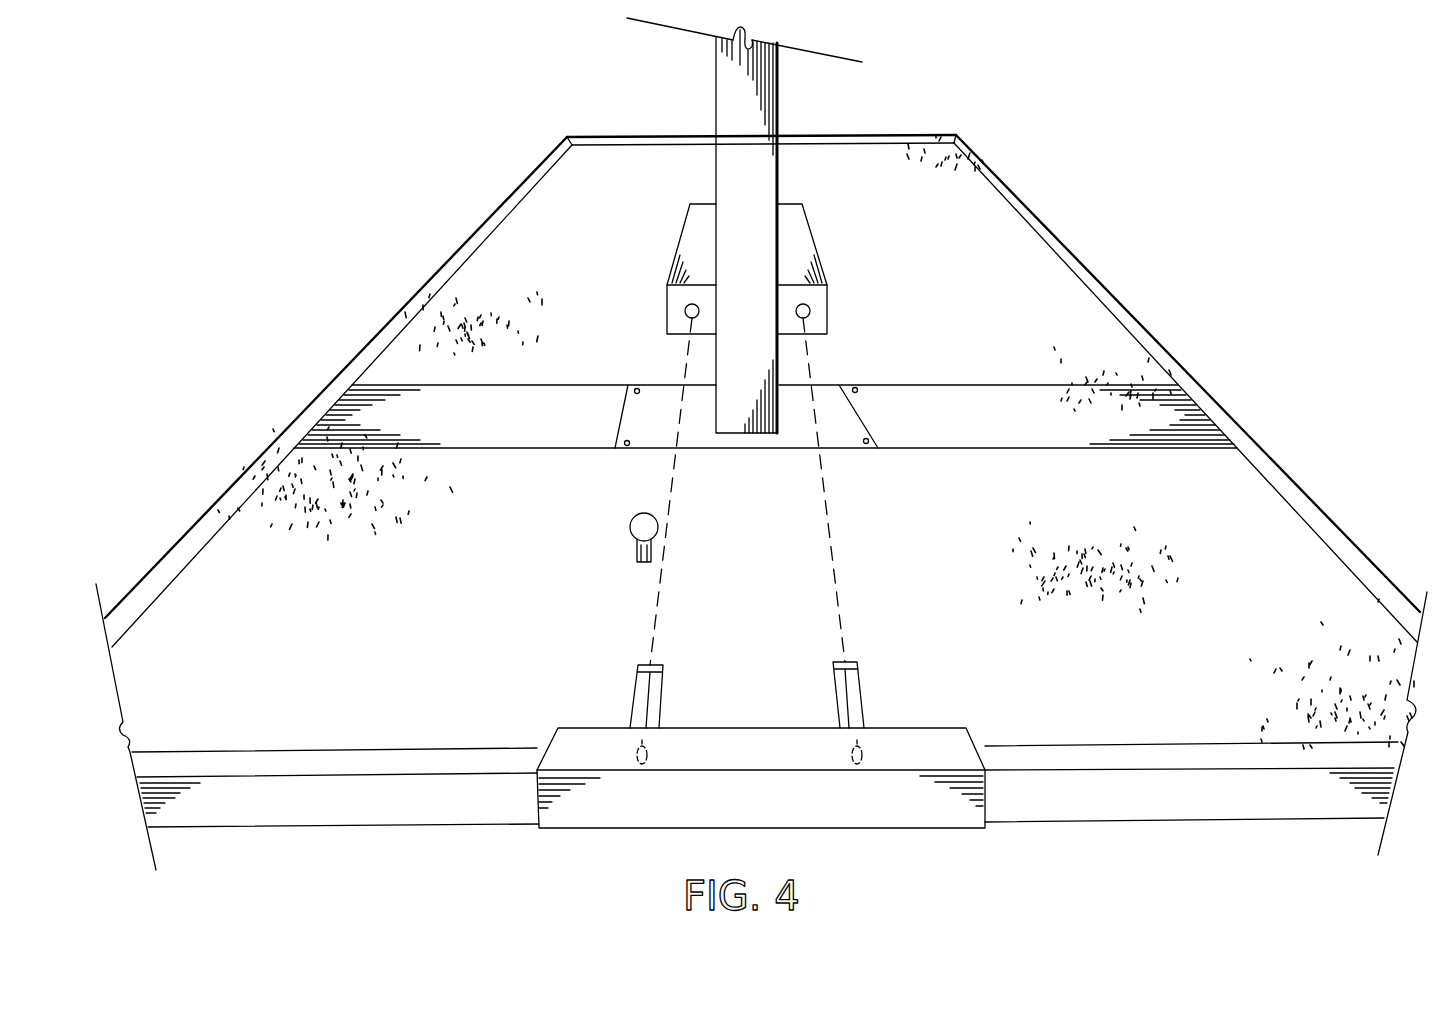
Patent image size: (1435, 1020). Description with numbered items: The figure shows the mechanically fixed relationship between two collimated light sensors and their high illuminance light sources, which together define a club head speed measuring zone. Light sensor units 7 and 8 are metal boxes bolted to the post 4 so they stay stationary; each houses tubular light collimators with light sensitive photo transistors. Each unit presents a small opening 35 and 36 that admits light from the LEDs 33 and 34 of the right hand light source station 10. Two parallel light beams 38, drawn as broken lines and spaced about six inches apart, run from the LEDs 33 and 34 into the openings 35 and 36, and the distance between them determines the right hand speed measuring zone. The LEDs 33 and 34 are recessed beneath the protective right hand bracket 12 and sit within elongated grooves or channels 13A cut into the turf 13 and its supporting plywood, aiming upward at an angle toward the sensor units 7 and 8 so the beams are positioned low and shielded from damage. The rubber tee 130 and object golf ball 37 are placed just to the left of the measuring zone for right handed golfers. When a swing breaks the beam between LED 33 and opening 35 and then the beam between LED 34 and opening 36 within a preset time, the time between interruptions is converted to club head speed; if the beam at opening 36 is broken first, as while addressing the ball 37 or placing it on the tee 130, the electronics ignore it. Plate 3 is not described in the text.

The deck plate 3 is at (1133, 423).
The post 4 is at (716, 67).
The light sensor unit 7 is at (840, 242).
The light sensor unit 8 is at (648, 243).
The right hand light source station 10 is at (845, 740).
The right hand bracket 12 is at (773, 756).
The turf 13 is at (492, 270).
The grooves or channels 13A is at (642, 670).
The LED 33 is at (866, 756).
The LED 34 is at (638, 749).
The opening 35 is at (807, 307).
The opening 36 is at (688, 307).
The object golf ball 37 is at (547, 574).
The light beams 38 is at (826, 522).
The rubber tee 130 is at (633, 558).